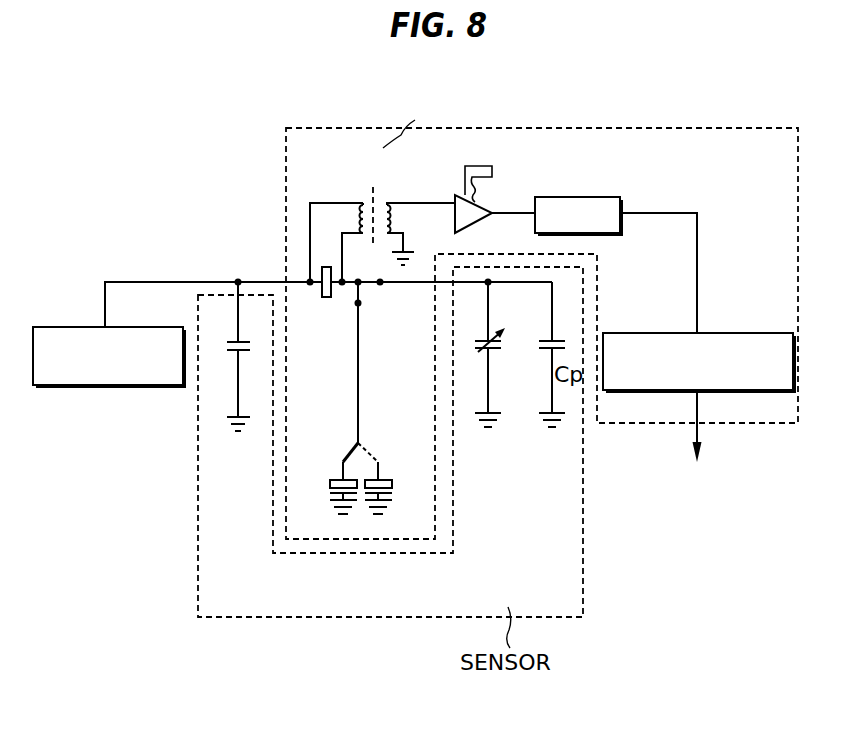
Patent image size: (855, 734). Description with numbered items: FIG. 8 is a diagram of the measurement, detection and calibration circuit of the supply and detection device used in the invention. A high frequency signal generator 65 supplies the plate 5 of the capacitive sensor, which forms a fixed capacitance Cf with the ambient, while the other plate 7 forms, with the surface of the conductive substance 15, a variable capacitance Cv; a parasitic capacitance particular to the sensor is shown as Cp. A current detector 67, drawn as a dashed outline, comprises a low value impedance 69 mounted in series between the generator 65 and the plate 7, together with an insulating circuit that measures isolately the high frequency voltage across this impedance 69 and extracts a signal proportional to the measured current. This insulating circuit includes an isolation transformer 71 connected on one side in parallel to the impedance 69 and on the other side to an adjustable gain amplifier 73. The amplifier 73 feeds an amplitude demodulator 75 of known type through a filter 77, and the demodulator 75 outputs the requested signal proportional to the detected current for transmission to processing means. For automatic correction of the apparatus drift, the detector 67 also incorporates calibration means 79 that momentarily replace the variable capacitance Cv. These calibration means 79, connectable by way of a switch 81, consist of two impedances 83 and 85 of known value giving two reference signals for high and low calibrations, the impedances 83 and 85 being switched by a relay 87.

The plate 5 is at (246, 342).
The plate 7 is at (483, 340).
The conductive substance 15 is at (490, 350).
The high frequency signal generator 65 is at (137, 385).
The current detector 67 is at (333, 127).
The low value impedance 69 is at (327, 297).
The isolation transformer 71 is at (374, 187).
The adjustable gain amplifier 73 is at (468, 220).
The amplitude demodulator 75 is at (738, 333).
The filter 77 is at (580, 197).
The calibration means 79 is at (386, 462).
The switch 81 is at (380, 280).
The impedance 83 is at (330, 491).
The impedance 85 is at (392, 493).
The relay 87 is at (350, 455).